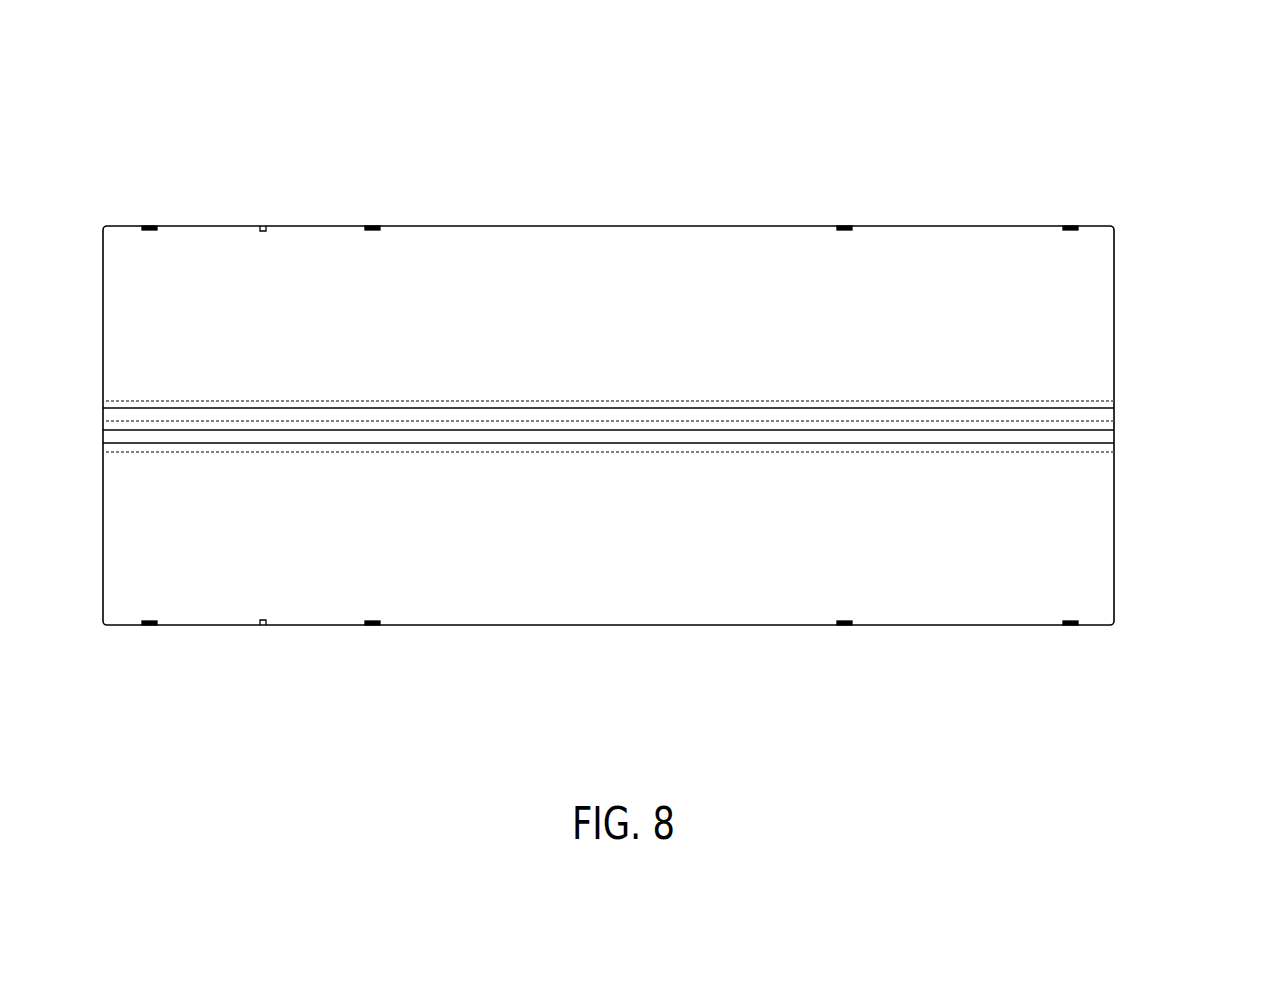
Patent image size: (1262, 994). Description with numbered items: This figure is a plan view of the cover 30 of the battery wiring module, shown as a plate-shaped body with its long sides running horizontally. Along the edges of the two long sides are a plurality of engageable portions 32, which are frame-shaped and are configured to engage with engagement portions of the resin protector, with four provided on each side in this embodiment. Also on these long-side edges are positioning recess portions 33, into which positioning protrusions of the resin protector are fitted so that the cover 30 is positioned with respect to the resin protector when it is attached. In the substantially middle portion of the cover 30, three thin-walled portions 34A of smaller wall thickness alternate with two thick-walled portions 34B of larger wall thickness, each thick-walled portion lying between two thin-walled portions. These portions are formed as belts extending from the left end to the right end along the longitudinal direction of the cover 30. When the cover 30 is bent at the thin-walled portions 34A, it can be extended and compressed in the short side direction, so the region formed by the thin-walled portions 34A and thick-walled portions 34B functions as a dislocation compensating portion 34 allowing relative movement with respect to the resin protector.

The cover 30 is at (650, 175).
The engageable portions 32 is at (150, 226).
The positioning recess portions 33 is at (263, 228).
The dislocation compensating portion 34 is at (673, 422).
The thin-walled portions 34A is at (1114, 401).
The thick-walled portions 34B is at (1114, 414).